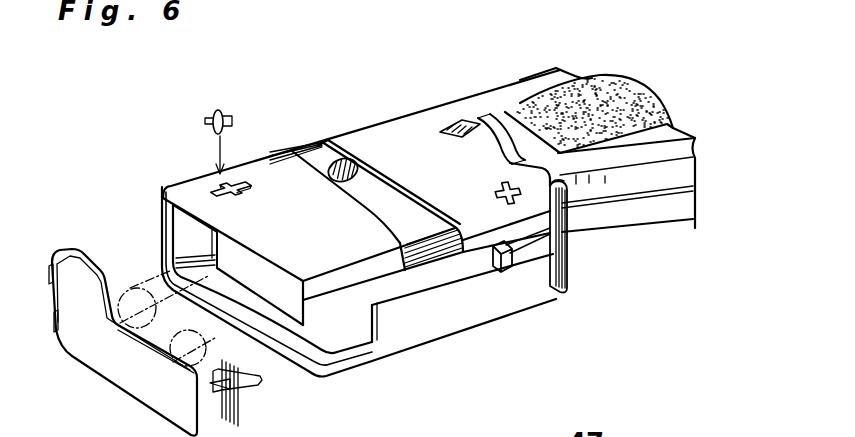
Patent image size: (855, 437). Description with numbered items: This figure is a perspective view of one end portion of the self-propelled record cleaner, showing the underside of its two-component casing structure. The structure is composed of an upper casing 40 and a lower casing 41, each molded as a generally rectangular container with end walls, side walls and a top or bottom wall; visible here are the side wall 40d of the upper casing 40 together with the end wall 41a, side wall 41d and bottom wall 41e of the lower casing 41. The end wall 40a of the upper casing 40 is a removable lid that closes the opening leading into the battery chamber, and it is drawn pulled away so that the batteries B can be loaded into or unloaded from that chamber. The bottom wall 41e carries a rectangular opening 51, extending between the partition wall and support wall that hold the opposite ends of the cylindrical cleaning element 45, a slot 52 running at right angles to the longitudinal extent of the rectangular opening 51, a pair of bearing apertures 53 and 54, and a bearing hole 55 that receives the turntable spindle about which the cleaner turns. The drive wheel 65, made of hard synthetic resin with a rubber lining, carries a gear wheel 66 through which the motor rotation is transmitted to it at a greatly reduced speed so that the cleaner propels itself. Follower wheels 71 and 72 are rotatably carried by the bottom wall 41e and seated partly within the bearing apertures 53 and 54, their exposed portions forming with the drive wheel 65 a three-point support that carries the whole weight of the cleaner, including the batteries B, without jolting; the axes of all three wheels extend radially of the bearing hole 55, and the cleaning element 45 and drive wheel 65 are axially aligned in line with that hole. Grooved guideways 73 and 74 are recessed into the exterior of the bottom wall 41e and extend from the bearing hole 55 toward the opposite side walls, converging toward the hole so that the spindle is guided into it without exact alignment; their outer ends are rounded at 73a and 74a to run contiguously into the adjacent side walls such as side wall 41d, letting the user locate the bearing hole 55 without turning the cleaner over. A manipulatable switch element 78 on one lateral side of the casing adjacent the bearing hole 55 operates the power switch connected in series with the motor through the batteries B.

The upper casing 40 is at (382, 360).
The end wall 40a is at (110, 370).
The side wall 40d is at (408, 323).
The lower casing 41 is at (266, 180).
The end wall 41a is at (283, 303).
The side wall 41d is at (668, 180).
The bottom wall 41e is at (420, 120).
The cylindrical cleaning element 45 is at (585, 107).
The rectangular opening 51 is at (640, 128).
The slot 52 is at (518, 197).
The bearing aperture 53 is at (234, 186).
The bearing aperture 54 is at (572, 235).
The bearing hole 55 is at (352, 160).
The drive wheel 65 is at (490, 130).
The gear wheel 66 is at (468, 128).
The follower wheel 71 is at (213, 110).
The follower wheel 72 is at (515, 205).
The grooved guideway 73 is at (418, 232).
The rounded outer end 73a is at (440, 256).
The grooved guideway 74 is at (310, 165).
The rounded outer end 74a is at (303, 157).
The manipulatable switch element 78 is at (512, 264).
The batteries B is at (200, 340).